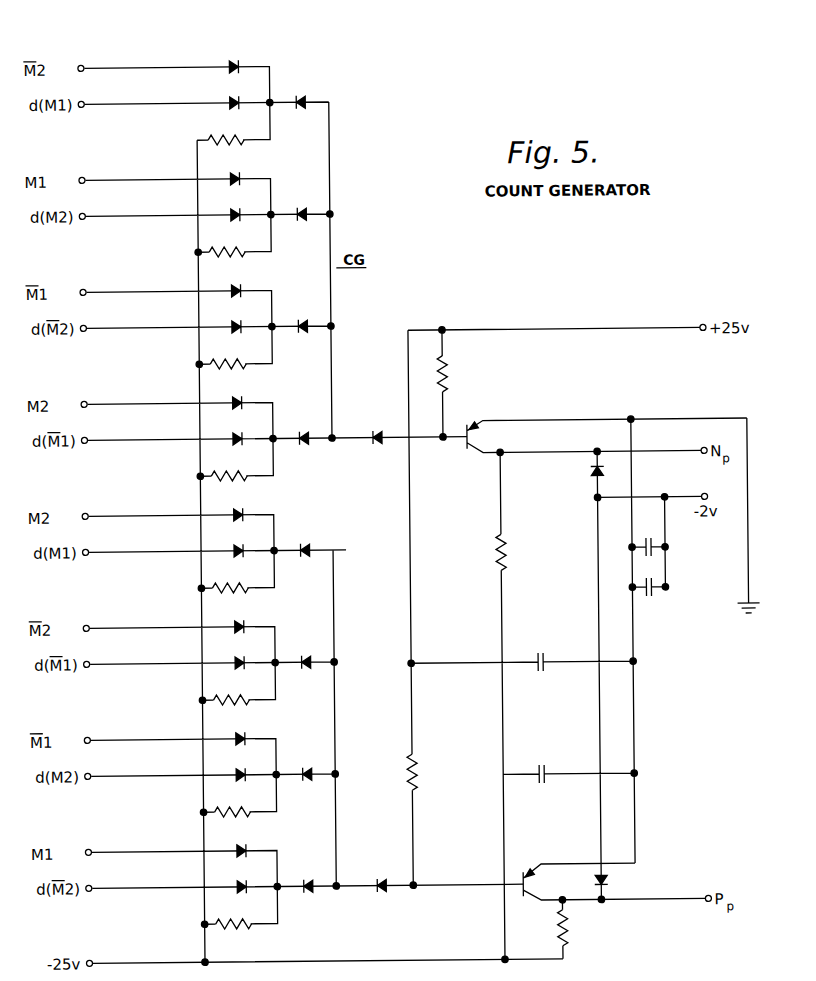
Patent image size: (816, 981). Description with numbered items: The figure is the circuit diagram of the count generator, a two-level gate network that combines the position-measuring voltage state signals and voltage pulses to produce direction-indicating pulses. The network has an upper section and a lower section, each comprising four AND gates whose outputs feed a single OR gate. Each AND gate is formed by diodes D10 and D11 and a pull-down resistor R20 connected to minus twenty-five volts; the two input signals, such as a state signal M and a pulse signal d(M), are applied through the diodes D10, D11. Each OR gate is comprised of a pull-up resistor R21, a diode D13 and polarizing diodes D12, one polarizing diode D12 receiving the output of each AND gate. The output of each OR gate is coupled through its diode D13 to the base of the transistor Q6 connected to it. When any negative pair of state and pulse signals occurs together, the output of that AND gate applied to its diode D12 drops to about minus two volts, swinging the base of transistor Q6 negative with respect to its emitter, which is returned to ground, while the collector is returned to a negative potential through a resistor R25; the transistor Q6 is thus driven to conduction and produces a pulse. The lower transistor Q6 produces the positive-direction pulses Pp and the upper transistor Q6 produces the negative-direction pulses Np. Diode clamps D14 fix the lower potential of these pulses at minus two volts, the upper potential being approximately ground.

The diode D10 is at (243, 446).
The diode D11 is at (229, 487).
The polarizing diode D12 is at (315, 484).
The diode D13 is at (376, 652).
The diode clamp D14 is at (602, 679).
The pull-down resistor R20 is at (227, 523).
The pull-up resistor R21 is at (444, 573).
The resistor R25 is at (549, 739).
The transistor Q6 is at (600, 666).